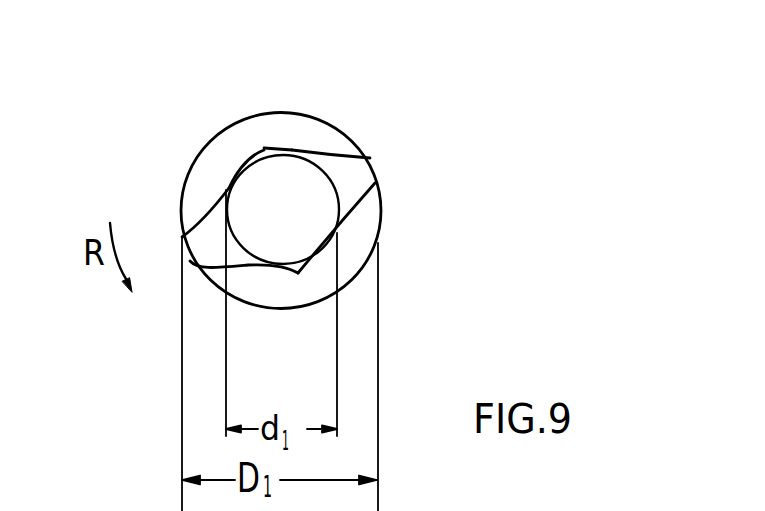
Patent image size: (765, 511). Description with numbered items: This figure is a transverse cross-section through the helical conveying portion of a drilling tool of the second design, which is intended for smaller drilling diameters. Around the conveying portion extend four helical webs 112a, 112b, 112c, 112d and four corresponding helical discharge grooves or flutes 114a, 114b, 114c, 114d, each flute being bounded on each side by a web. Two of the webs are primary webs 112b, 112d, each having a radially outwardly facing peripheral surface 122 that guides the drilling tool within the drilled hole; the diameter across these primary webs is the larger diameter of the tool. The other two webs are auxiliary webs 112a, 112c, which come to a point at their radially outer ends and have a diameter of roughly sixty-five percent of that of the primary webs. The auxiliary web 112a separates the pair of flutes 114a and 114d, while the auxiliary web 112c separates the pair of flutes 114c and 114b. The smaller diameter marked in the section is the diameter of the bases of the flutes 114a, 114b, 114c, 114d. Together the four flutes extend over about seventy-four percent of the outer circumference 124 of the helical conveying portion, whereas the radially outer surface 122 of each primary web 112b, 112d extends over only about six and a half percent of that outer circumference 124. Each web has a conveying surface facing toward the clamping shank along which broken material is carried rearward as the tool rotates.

The auxiliary web 112a is at (264, 148).
The primary web 112b is at (370, 158).
The auxiliary web 112c is at (298, 273).
The primary web 112d is at (190, 262).
The helical flute 114a is at (292, 150).
The helical flute 114b is at (327, 241).
The helical flute 114c is at (263, 269).
The helical flute 114d is at (229, 188).
The radially outwardly facing peripheral surface 122 is at (375, 178).
The outer circumference 124 is at (212, 137).